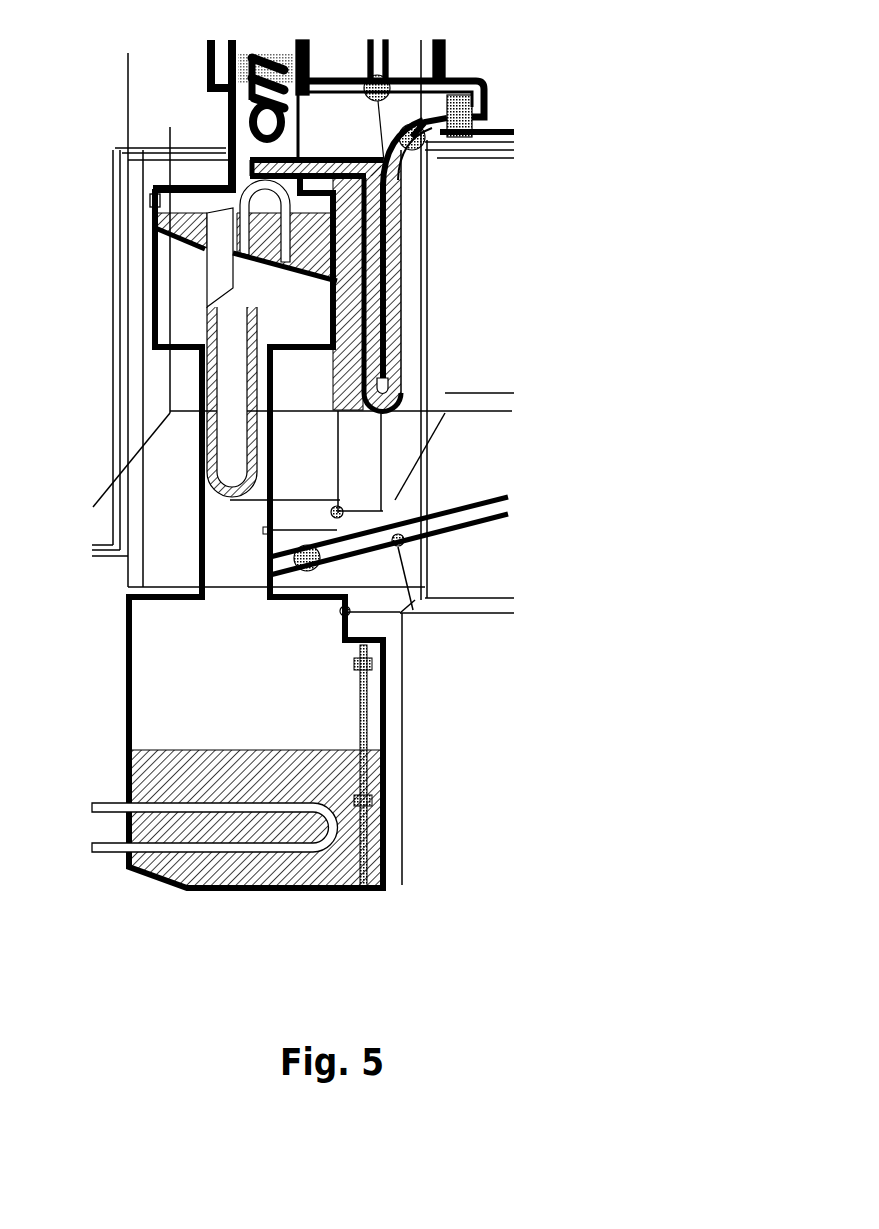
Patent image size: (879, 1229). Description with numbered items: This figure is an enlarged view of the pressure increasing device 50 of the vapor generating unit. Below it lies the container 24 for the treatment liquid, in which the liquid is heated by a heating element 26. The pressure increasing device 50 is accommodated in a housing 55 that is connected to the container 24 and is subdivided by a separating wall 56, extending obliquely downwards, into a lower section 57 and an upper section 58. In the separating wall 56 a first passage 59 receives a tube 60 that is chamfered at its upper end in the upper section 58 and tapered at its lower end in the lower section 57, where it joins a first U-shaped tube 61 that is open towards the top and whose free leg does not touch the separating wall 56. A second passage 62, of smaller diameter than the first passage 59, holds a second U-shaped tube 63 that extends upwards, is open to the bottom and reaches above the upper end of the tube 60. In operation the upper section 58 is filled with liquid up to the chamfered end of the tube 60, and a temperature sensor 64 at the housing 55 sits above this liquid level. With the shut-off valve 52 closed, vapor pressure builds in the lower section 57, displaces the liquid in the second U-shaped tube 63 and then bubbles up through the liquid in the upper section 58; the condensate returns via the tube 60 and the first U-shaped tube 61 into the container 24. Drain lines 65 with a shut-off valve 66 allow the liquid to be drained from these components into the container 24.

The container 24 is at (133, 668).
The heating element 26 is at (180, 850).
The pressure increasing device 50 is at (468, 273).
The shut-off valve 52 is at (320, 563).
The housing 55 is at (152, 343).
The separating wall 56 is at (222, 253).
The lower section 57 is at (297, 327).
The upper section 58 is at (195, 197).
The first passage 59 is at (205, 268).
The tube 60 is at (208, 290).
The first U-shaped tube 61 is at (200, 397).
The second passage 62 is at (300, 300).
The second U-shaped tube 63 is at (287, 227).
The temperature sensor 64 is at (170, 127).
The drain lines 65 is at (378, 450).
The shut-off valve 66 is at (342, 511).